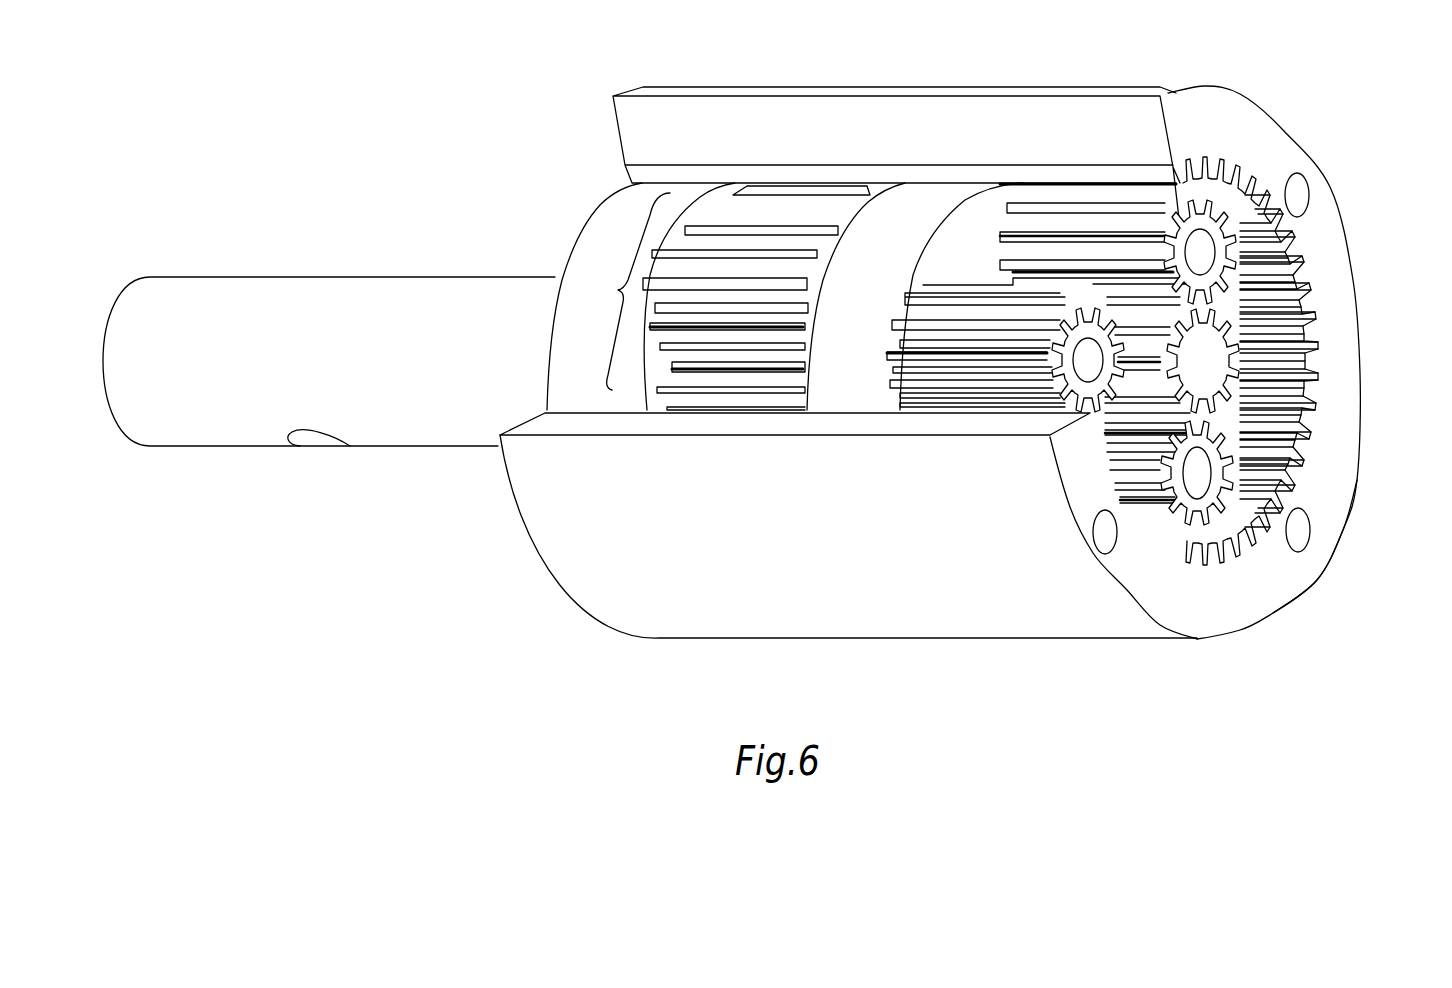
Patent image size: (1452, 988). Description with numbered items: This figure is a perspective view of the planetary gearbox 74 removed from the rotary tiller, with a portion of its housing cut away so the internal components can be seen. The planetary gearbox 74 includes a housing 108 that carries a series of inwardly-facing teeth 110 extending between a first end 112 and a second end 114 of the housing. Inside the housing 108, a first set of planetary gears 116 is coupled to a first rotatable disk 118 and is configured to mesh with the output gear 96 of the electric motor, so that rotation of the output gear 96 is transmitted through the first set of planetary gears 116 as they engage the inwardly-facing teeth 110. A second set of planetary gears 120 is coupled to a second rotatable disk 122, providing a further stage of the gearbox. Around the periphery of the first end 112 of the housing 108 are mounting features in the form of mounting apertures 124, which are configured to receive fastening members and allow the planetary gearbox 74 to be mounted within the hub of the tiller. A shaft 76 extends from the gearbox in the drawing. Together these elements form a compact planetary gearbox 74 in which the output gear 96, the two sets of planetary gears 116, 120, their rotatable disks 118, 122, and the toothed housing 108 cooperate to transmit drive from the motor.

The planetary gearbox 74 is at (770, 68).
The shaft 76 is at (362, 277).
The output gear 96 is at (1197, 362).
The housing 108 is at (1258, 122).
The inwardly-facing teeth 110 is at (1307, 432).
The first end 112 is at (1270, 611).
The second end 114 is at (655, 639).
The first set of planetary gears 116 is at (1207, 218).
The first rotatable disk 118 is at (876, 232).
The second set of planetary gears 120 is at (721, 298).
The second rotatable disk 122 is at (560, 318).
The mounting apertures 124 is at (1297, 195).